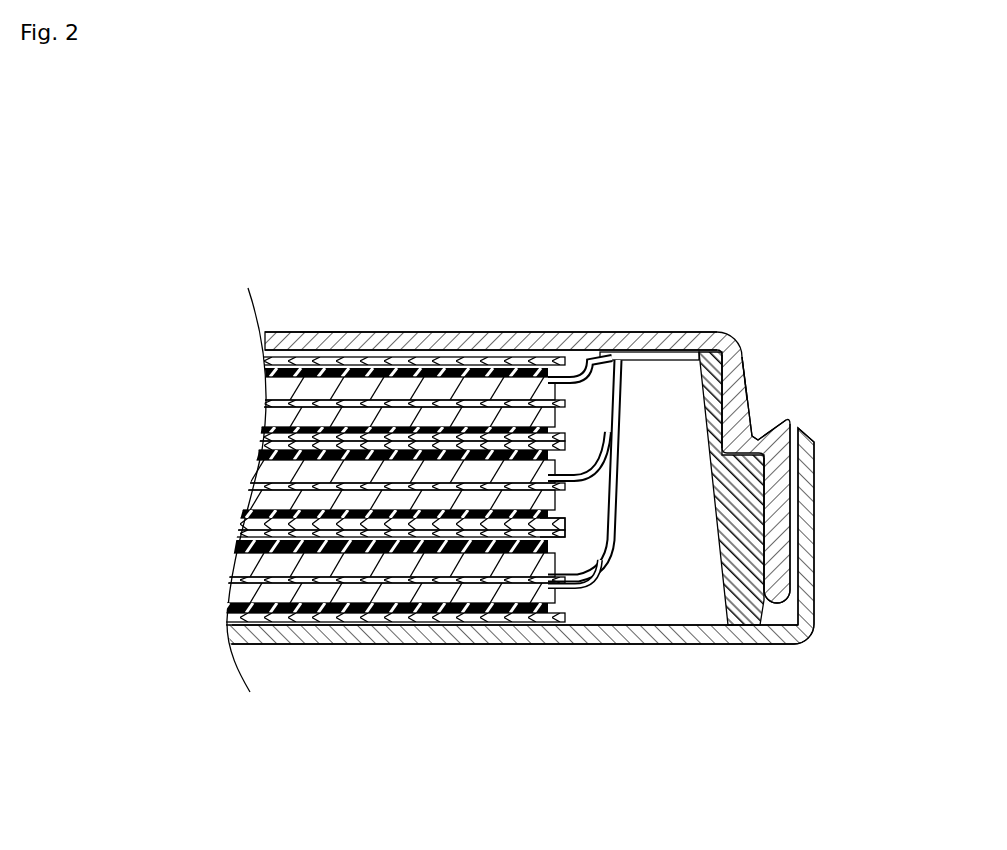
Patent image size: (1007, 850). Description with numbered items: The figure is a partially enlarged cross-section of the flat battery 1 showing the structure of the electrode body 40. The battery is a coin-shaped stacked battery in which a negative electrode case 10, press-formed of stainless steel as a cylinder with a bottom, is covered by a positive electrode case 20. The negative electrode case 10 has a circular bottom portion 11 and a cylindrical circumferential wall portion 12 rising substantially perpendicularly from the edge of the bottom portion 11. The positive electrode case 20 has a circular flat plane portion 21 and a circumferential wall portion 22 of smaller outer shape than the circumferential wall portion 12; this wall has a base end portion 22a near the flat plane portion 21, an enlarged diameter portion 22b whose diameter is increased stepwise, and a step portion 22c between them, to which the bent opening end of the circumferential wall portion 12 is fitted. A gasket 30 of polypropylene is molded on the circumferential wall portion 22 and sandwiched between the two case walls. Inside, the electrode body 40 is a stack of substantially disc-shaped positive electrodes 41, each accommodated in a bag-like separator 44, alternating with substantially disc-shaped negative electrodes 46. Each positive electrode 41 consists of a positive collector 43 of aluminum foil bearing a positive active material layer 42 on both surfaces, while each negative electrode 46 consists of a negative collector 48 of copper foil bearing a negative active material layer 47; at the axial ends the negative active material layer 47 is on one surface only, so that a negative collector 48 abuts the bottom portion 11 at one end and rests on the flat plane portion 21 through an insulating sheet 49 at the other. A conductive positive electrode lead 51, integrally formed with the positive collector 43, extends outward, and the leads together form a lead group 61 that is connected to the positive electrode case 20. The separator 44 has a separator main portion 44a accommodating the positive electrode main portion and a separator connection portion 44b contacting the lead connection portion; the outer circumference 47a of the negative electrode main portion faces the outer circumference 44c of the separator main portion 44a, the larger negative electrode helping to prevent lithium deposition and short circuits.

The flat battery 1 is at (689, 265).
The negative electrode case 10 is at (583, 650).
The bottom portion 11 is at (757, 646).
The circumferential wall portion 12 is at (814, 520).
The positive electrode case 20 is at (472, 330).
The flat plane portion 21 is at (415, 332).
The circumferential wall portion 22 is at (752, 388).
The base end portion 22a is at (747, 363).
The enlarged diameter portion 22b is at (795, 493).
The step portion 22c is at (762, 436).
The gasket 30 is at (805, 625).
The electrode body 40 is at (607, 600).
The positive electrode 41 is at (397, 727).
The positive active material layer 42 is at (413, 640).
The positive collector 43 is at (360, 622).
The separator 44 is at (320, 625).
The separator main portion 44a is at (514, 600).
The separator connection portion 44b is at (606, 530).
The outer circumference of the separator main portion 44c is at (553, 594).
The negative electrode 46 is at (118, 452).
The negative active material layer 47 is at (237, 542).
The outer circumference of the negative electrode main portion 47a is at (618, 522).
The negative collector 48 is at (265, 452).
The insulating sheet 49 is at (318, 332).
The positive electrode lead 51 is at (622, 497).
The lead group 61 is at (642, 520).